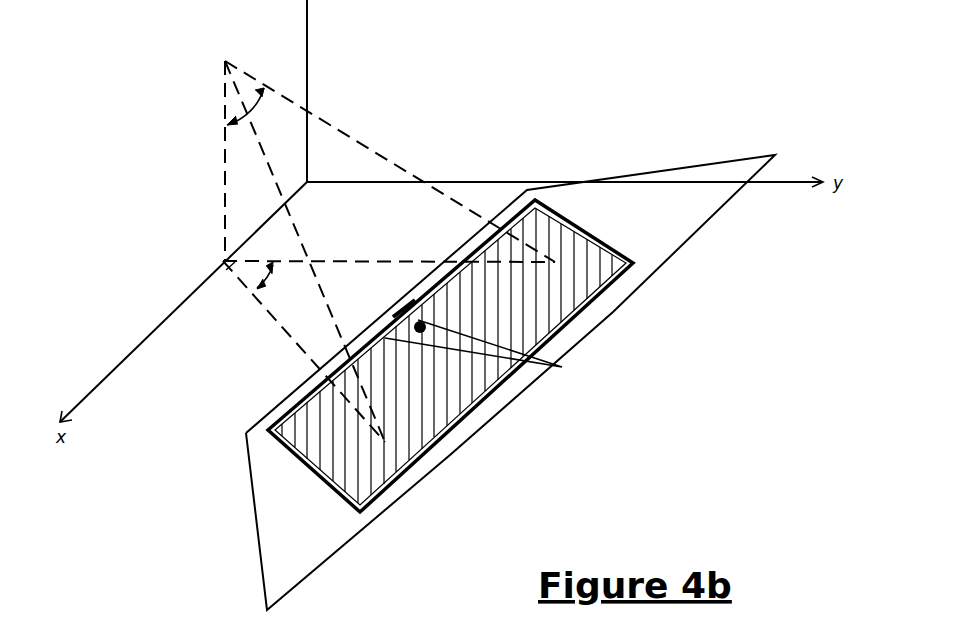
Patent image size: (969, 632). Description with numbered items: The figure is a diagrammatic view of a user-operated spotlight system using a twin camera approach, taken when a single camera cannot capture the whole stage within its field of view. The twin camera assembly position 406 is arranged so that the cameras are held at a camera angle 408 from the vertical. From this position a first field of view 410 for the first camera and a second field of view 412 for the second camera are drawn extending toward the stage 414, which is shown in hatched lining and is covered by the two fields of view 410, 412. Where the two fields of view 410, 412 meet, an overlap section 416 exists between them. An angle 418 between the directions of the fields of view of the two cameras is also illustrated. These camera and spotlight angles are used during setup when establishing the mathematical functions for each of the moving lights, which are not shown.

The twin camera assembly position 406 is at (225, 61).
The camera angle 408 is at (243, 116).
The first field of view 410 is at (668, 263).
The second field of view 412 is at (408, 485).
The stage 414 is at (467, 397).
The overlap section 416 is at (468, 338).
The angle between the direction of fields of view 418 is at (243, 275).